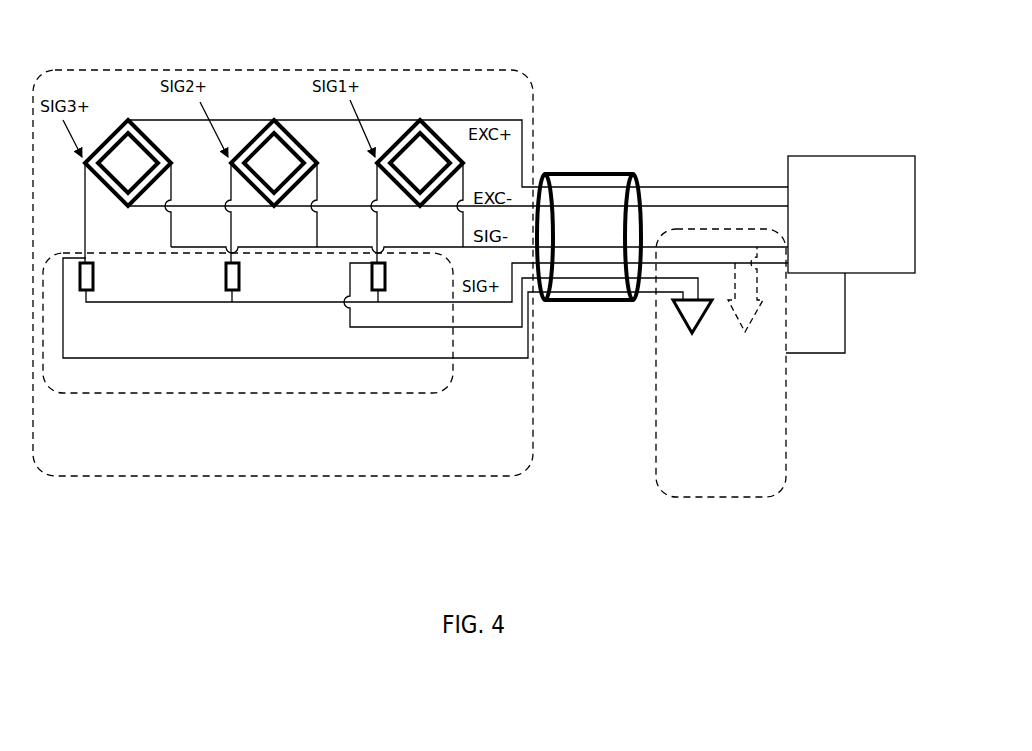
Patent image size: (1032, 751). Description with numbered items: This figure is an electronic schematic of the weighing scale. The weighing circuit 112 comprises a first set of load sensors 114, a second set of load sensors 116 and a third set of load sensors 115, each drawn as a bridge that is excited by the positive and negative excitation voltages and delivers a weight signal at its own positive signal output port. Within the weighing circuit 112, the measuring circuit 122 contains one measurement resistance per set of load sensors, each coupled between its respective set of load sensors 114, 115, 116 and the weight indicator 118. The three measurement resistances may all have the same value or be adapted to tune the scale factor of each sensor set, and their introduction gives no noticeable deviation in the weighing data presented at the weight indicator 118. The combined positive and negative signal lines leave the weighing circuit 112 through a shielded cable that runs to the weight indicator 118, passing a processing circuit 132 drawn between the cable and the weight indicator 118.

The weighing circuit 112 is at (283, 273).
The first set of load sensors 114 is at (128, 114).
The third set of load sensors 115 is at (274, 114).
The second set of load sensors 116 is at (420, 114).
The weight indicator 118 is at (850, 254).
The measuring circuit 122 is at (415, 323).
The processing circuit 132 is at (721, 363).